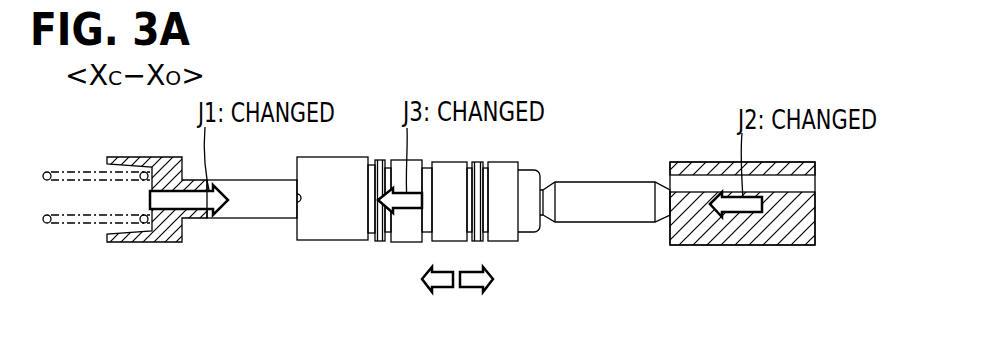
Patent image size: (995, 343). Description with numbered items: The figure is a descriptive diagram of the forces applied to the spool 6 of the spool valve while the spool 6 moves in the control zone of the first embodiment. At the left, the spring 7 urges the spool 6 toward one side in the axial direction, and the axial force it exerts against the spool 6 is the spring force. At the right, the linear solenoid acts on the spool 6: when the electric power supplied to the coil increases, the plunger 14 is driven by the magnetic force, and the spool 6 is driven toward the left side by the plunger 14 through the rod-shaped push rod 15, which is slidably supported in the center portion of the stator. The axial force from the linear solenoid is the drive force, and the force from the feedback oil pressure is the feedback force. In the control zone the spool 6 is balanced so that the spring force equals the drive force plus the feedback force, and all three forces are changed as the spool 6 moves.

The spring 7 is at (78, 227).
The spool 6 is at (257, 218).
The push rod 15 is at (593, 217).
The plunger 14 is at (722, 237).